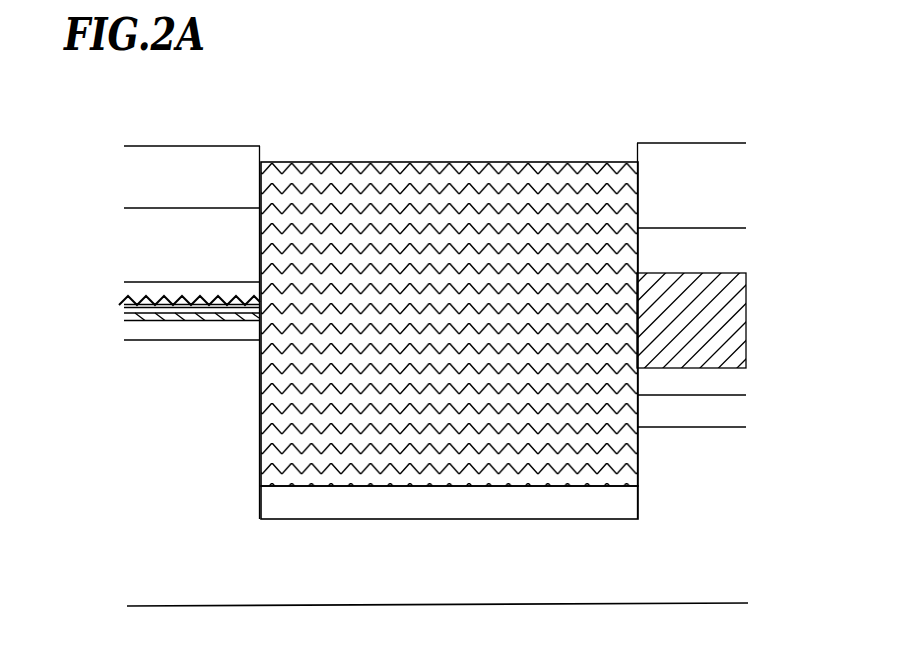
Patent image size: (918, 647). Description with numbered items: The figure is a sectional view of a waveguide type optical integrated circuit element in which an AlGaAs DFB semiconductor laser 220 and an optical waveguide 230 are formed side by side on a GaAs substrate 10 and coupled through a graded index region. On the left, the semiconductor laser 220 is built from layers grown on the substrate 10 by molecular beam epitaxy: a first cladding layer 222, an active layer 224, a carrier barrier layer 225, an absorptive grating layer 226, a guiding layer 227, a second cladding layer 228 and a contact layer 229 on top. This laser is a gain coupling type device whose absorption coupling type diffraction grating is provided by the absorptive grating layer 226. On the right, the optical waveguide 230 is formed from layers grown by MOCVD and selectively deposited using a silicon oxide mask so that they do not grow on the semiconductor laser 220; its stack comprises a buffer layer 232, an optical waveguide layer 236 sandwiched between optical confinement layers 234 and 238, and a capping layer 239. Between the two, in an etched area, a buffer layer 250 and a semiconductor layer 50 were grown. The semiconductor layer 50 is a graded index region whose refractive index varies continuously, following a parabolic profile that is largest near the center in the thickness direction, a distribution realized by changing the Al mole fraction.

The GaAs substrate 10 is at (168, 571).
The semiconductor layer (graded index region) 50 is at (461, 176).
The AlGaAs DFB semiconductor laser 220 is at (212, 112).
The first cladding layer 222 is at (145, 332).
The active layer 224 is at (135, 322).
The carrier barrier layer 225 is at (125, 309).
The absorptive grating layer 226 is at (125, 301).
The guiding layer 227 is at (127, 300).
The second cladding layer 228 is at (137, 227).
The contact layer 229 is at (137, 178).
The optical waveguide 230 is at (709, 112).
The buffer layer 232 is at (742, 413).
The optical confinement layer 234 is at (735, 386).
The optical waveguide layer 236 is at (735, 320).
The optical confinement layer 238 is at (737, 252).
The capping layer 239 is at (737, 191).
The buffer layer 250 is at (632, 502).